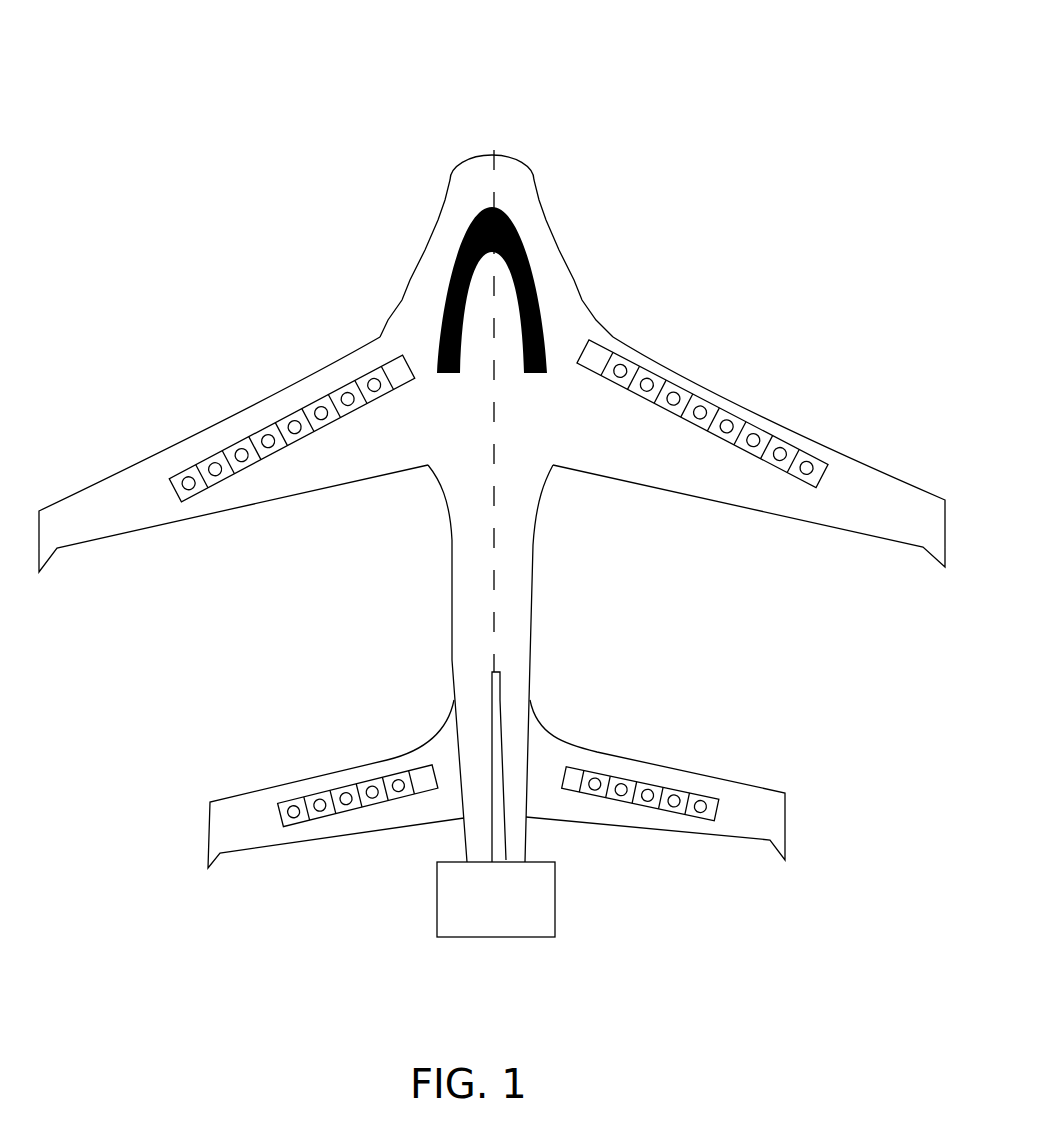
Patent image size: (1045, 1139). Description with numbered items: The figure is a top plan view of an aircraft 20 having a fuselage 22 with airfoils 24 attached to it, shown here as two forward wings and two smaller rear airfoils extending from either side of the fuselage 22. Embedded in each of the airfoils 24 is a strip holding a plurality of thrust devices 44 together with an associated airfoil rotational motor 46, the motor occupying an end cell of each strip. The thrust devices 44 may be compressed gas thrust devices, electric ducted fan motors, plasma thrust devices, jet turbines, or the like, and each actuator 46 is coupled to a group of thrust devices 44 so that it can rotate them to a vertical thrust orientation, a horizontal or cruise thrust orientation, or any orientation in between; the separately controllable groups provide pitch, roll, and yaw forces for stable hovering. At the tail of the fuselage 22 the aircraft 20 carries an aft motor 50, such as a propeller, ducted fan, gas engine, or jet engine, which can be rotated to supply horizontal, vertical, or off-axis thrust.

The aircraft 20 is at (583, 160).
The fuselage 22 is at (494, 570).
The airfoils 24 is at (102, 487).
The thrust devices 44 is at (242, 473).
The airfoil rotational motor 46 is at (400, 370).
The aft motor 50 is at (437, 937).